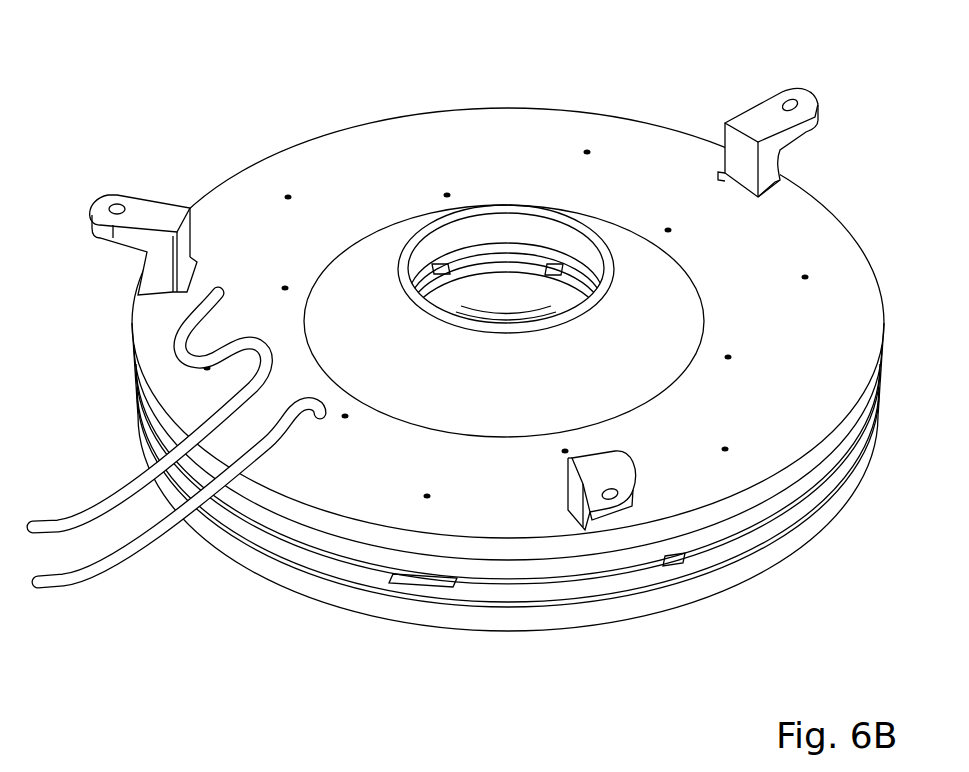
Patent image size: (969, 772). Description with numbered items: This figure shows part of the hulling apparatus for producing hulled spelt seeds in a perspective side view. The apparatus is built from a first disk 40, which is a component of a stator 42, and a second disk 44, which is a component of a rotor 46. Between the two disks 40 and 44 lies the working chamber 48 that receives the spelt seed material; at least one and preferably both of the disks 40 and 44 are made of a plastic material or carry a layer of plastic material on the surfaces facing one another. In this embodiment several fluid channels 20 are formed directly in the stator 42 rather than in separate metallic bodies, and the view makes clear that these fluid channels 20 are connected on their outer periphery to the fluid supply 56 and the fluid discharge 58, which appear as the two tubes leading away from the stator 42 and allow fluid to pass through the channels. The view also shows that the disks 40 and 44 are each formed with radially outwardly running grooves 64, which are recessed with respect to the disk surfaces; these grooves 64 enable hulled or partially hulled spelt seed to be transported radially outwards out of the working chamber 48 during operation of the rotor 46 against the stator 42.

The fluid channels 20 is at (174, 367).
The first disk 40 is at (467, 257).
The stator 42 is at (837, 313).
The second disk 44 is at (574, 292).
The rotor 46 is at (815, 522).
The working chamber 48 is at (745, 543).
The fluid supply 56 is at (78, 578).
The fluid discharge 58 is at (68, 514).
The grooves 64 is at (533, 272).